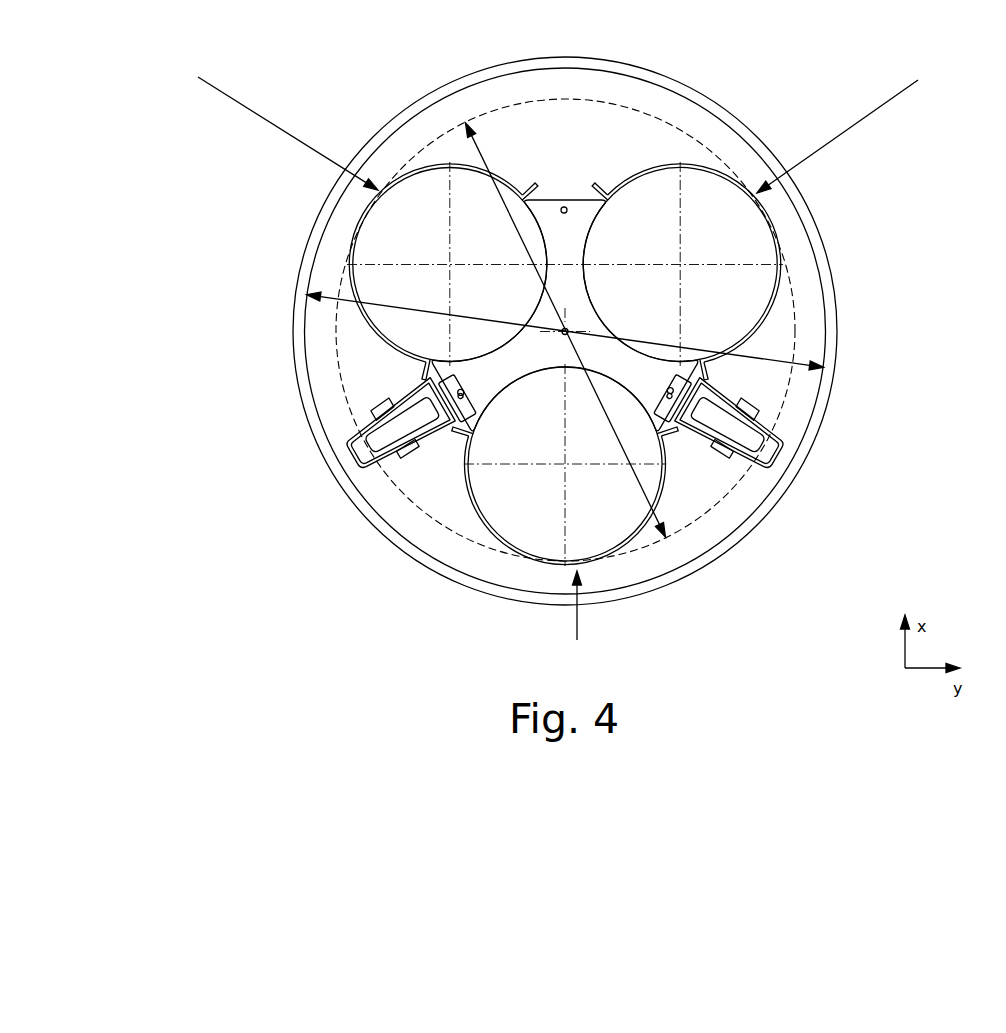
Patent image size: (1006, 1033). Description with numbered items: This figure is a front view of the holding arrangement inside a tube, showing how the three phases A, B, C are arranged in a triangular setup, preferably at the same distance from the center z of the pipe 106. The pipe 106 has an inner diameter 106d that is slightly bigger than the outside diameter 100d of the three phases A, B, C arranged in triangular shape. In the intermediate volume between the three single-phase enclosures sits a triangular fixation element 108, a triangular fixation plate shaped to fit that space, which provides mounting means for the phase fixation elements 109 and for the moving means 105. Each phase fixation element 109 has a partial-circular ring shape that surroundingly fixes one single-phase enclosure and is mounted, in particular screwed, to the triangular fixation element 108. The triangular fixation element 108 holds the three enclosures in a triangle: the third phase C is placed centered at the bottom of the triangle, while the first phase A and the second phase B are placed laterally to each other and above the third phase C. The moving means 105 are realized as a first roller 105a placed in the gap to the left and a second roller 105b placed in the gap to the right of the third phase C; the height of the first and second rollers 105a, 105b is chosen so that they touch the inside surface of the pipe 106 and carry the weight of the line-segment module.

The diameter of pitch circle of cylinders 100d is at (670, 539).
The moving means 105 is at (339, 463).
The first roller 105a is at (565, 426).
The second roller 105b is at (565, 398).
The pipe 106 is at (378, 113).
The inner diameter of outer ring 106d is at (306, 297).
The triangular fixation element 108 is at (554, 210).
The phase fixation element 109 is at (358, 225).
The first phase A is at (276, 125).
The second phase B is at (849, 127).
The third phase C is at (577, 616).
The center of the pipe z is at (568, 331).